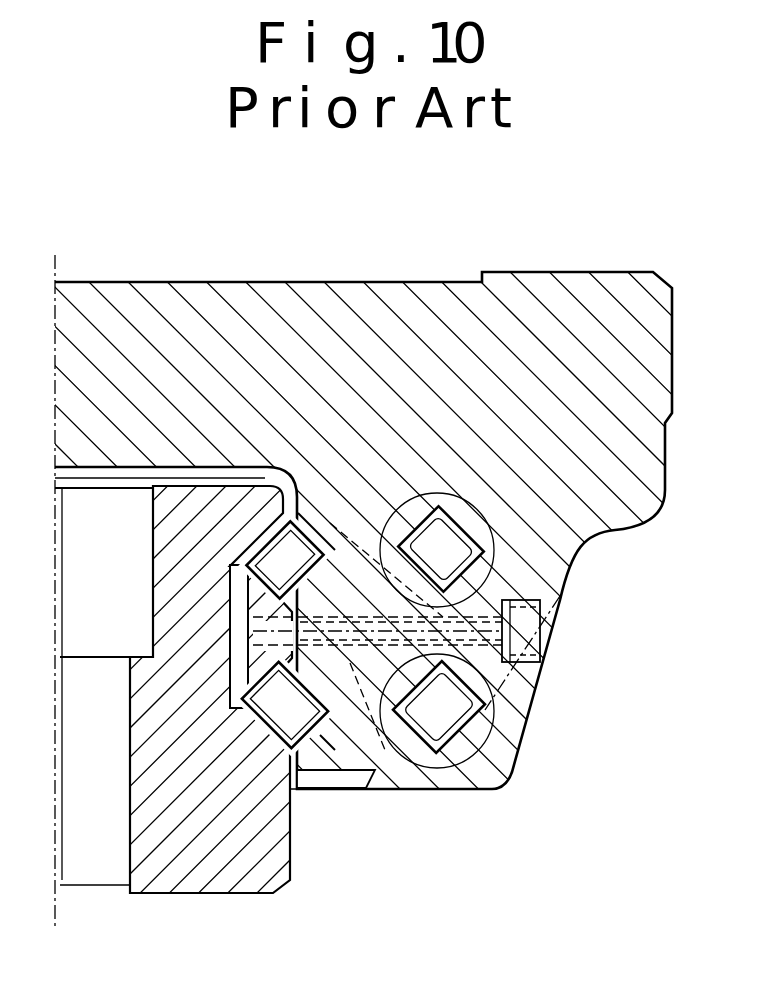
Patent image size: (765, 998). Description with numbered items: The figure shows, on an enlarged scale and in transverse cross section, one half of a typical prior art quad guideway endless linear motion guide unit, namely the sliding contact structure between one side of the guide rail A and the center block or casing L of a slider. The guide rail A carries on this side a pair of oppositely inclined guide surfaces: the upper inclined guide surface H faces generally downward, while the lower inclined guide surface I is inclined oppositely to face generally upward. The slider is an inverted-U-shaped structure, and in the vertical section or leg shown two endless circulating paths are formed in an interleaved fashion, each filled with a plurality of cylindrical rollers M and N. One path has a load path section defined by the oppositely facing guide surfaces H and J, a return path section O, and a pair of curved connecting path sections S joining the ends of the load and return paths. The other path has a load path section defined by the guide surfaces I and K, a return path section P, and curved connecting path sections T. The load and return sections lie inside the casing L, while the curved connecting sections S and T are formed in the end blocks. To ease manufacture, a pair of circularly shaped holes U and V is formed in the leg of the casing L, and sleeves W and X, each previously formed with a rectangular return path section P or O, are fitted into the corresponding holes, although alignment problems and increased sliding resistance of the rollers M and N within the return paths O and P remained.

The center block or casing L is at (543, 300).
The guide rail A is at (230, 875).
The roller M is at (248, 577).
The roller N is at (230, 693).
The upper inclined guide surface H is at (302, 505).
The guide surface J is at (314, 484).
The lower inclined guide surface I is at (293, 765).
The guide surface K is at (327, 748).
The curved connecting path section T is at (352, 778).
The curved connecting path section S is at (380, 700).
The sleeve X is at (457, 747).
The circularly shaped hole U is at (520, 517).
The sleeve W is at (525, 560).
The return path section O is at (497, 735).
The circularly shaped hole V is at (480, 705).
The return path section P is at (545, 605).